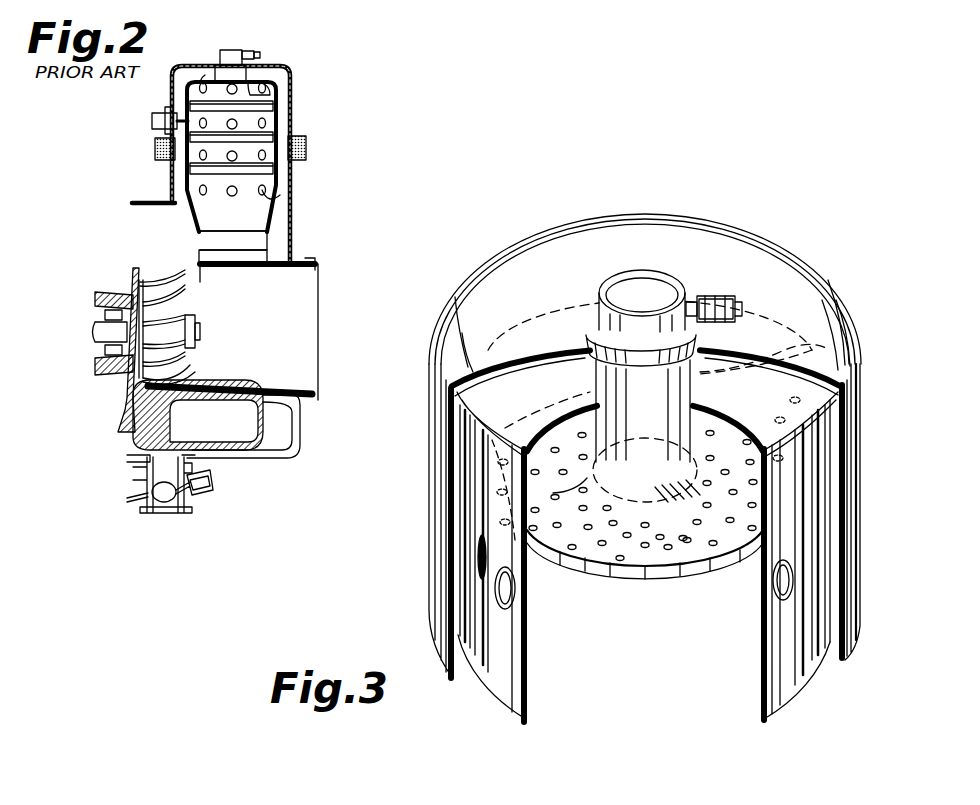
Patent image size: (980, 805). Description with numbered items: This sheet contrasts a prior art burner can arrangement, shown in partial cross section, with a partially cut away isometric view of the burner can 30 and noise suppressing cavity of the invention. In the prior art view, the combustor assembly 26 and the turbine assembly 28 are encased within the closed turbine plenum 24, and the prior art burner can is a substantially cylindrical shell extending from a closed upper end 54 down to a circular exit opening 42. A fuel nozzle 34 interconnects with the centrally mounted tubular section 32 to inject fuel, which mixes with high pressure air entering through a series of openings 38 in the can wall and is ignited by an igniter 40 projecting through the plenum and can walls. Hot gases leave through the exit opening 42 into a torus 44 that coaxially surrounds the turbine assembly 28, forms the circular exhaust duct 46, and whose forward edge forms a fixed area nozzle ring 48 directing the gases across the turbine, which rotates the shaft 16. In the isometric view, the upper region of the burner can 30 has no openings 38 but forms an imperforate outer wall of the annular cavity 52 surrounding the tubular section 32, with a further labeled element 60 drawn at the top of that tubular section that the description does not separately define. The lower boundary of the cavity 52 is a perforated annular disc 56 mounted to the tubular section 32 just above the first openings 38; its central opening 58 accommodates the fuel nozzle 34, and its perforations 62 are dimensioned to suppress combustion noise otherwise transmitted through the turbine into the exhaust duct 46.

In FIG. 2, the shaft 16 is at (90, 328).
In FIG. 2, the turbine plenum 24 is at (280, 68).
In FIG. 3, the turbine plenum 24 is at (820, 650).
In FIG. 2, the combustor assembly 26 is at (262, 218).
In FIG. 2, the turbine assembly 28 is at (190, 367).
In FIG. 2, the burner can 30 is at (250, 122).
In FIG. 3, the burner can 30 is at (546, 382).
In FIG. 3, the tubular section 32 is at (700, 297).
In FIG. 2, the fuel nozzle 34 is at (230, 50).
In FIG. 3, the fuel nozzle 34 is at (713, 297).
In FIG. 2, the openings 38 is at (173, 200).
In FIG. 3, the openings 38 is at (505, 590).
In FIG. 2, the igniter 40 is at (153, 120).
In FIG. 2, the circular exit opening 42 is at (257, 243).
In FIG. 2, the torus 44 is at (217, 268).
In FIG. 2, the exhaust duct 46 is at (307, 333).
In FIG. 2, the nozzle ring 48 is at (143, 227).
In FIG. 3, the annular cavity 52 is at (717, 490).
In FIG. 2, the closed upper end 54 is at (283, 89).
In FIG. 3, the closed upper end 54 is at (773, 373).
In FIG. 3, the perforated annular disc 56 is at (598, 580).
In FIG. 3, the central opening 58 is at (627, 540).
In FIG. 3, the central tube 60 is at (630, 398).
In FIG. 3, the perforations 62 is at (645, 500).